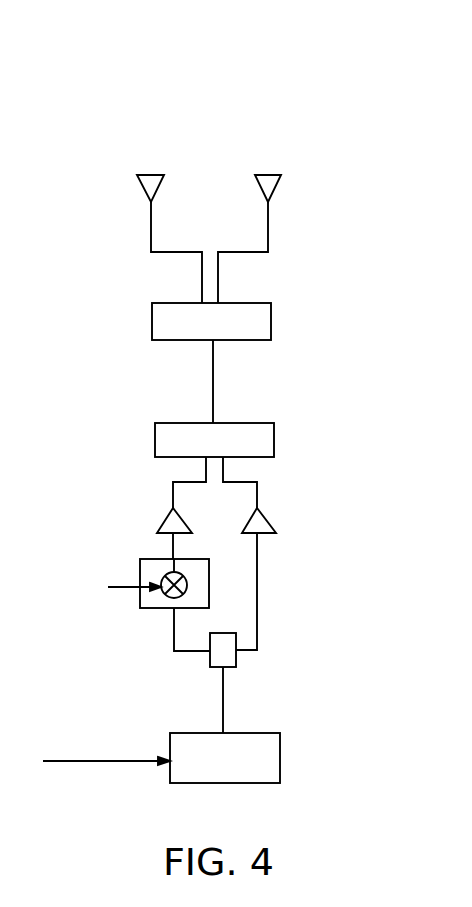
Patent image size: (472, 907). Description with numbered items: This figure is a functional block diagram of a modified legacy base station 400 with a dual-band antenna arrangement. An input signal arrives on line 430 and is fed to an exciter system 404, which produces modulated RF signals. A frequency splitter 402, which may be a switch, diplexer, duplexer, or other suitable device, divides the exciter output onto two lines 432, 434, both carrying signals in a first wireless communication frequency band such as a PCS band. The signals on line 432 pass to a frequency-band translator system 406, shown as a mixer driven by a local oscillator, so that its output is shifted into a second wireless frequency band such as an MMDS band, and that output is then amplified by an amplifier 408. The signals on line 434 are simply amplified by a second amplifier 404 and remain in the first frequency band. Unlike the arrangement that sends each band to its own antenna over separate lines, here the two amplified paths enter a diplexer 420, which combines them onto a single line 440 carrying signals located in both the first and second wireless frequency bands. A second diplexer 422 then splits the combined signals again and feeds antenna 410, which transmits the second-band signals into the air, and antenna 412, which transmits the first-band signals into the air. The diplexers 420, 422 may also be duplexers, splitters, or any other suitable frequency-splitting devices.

The transceiver system 400 is at (86, 98).
The first antenna 410 is at (138, 180).
The second antenna 412 is at (278, 182).
The diplexer 422 is at (271, 320).
The line 440 is at (213, 372).
The diplexer 420 is at (274, 437).
The receive amplifier 408 is at (166, 516).
The transmit amplifier / exciter 404 is at (268, 520).
The transmit path 434 is at (257, 592).
The mixer 406 is at (150, 608).
The receive path 432 is at (187, 651).
The coupler 402 is at (236, 660).
The input signal 430 is at (101, 761).